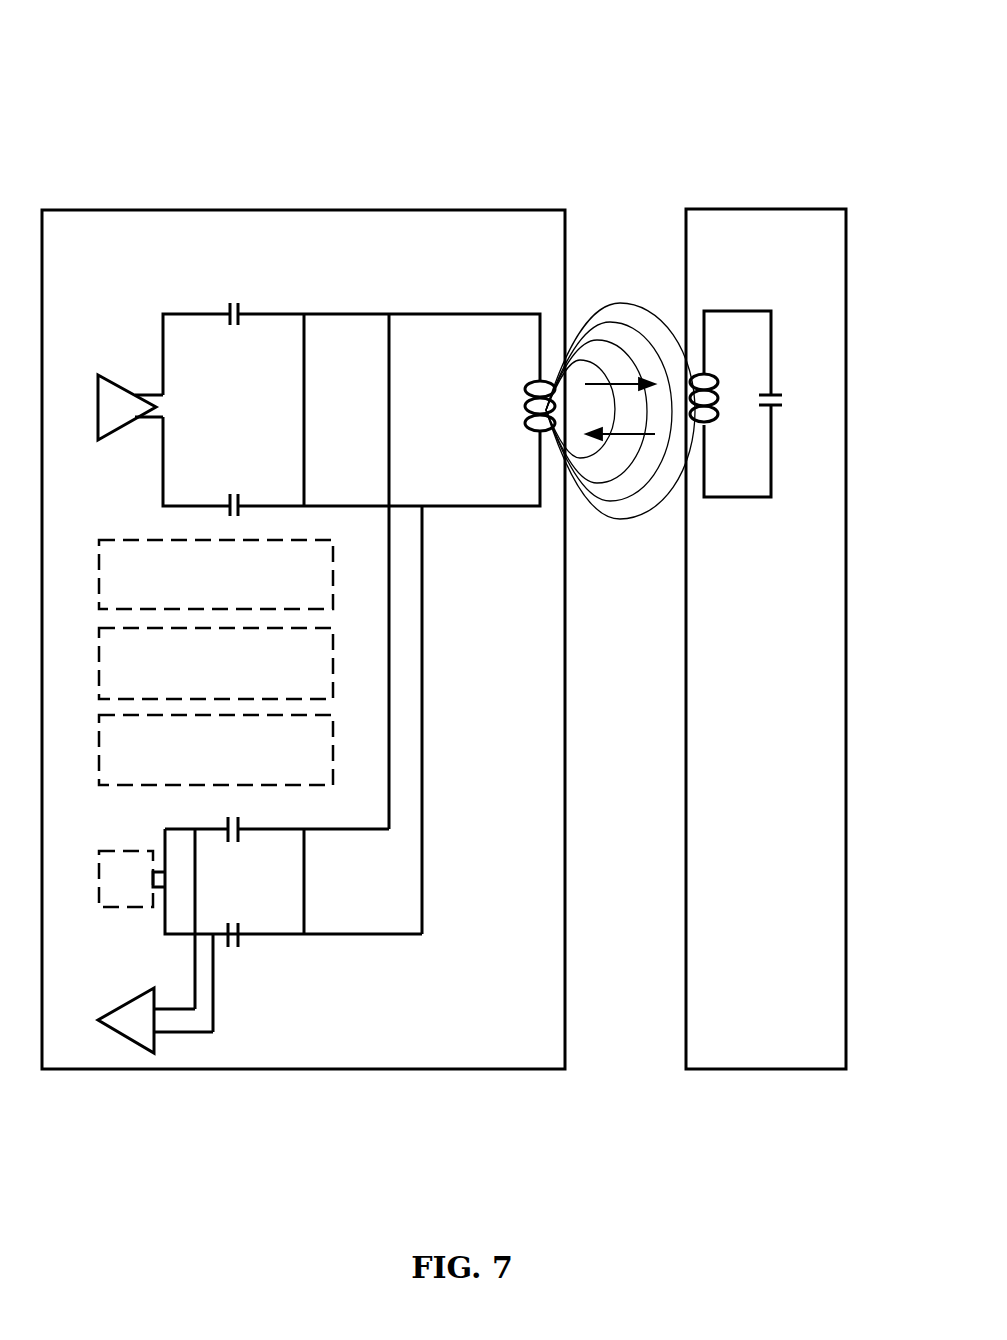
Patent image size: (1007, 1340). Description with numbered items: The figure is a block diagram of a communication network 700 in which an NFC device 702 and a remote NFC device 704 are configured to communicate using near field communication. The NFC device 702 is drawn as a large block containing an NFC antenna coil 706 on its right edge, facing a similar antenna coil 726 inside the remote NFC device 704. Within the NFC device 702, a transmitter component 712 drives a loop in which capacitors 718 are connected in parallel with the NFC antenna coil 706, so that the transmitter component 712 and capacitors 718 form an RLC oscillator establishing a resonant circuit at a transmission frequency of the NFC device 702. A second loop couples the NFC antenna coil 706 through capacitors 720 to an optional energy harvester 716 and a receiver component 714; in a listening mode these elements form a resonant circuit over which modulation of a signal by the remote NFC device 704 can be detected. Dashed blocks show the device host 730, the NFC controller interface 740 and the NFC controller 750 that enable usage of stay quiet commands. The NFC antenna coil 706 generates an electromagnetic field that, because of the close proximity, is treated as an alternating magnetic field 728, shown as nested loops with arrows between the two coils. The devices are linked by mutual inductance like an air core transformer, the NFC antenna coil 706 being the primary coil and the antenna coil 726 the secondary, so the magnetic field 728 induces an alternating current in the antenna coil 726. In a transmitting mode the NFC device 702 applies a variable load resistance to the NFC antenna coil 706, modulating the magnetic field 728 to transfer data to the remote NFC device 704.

The communication network 700 is at (717, 58).
The NFC device 702 is at (261, 210).
The remote NFC device 704 is at (789, 209).
The NFC antenna coil 706 is at (541, 420).
The transmitter component 712 is at (117, 380).
The receiver component 714 is at (137, 993).
The energy harvester 716 is at (125, 850).
The capacitor 718 is at (238, 325).
The capacitors 720 is at (240, 843).
The antenna coil 726 is at (705, 433).
The magnetic field 728 is at (588, 313).
The device host 730 is at (216, 574).
The NFC controller interface 740 is at (216, 663).
The NFC controller 750 is at (216, 750).